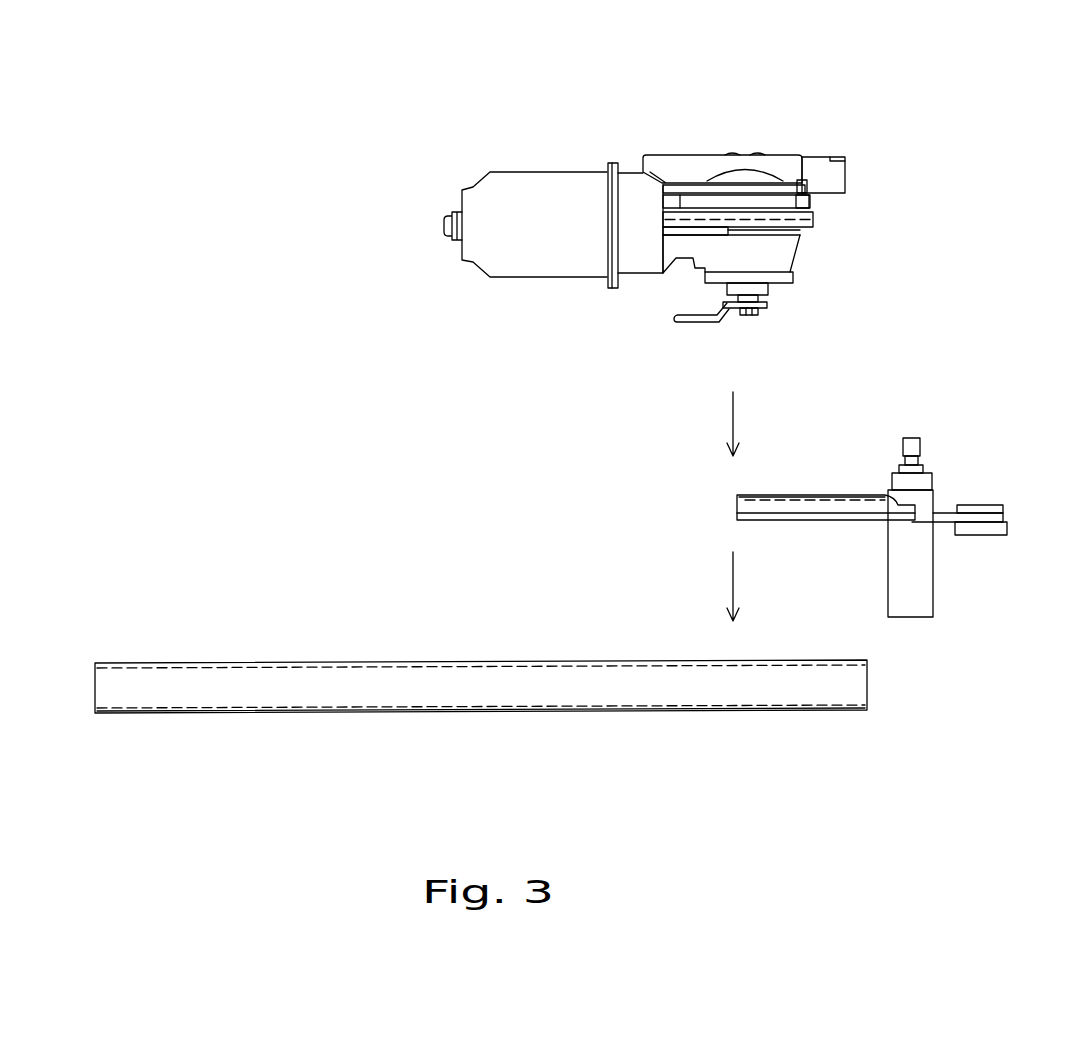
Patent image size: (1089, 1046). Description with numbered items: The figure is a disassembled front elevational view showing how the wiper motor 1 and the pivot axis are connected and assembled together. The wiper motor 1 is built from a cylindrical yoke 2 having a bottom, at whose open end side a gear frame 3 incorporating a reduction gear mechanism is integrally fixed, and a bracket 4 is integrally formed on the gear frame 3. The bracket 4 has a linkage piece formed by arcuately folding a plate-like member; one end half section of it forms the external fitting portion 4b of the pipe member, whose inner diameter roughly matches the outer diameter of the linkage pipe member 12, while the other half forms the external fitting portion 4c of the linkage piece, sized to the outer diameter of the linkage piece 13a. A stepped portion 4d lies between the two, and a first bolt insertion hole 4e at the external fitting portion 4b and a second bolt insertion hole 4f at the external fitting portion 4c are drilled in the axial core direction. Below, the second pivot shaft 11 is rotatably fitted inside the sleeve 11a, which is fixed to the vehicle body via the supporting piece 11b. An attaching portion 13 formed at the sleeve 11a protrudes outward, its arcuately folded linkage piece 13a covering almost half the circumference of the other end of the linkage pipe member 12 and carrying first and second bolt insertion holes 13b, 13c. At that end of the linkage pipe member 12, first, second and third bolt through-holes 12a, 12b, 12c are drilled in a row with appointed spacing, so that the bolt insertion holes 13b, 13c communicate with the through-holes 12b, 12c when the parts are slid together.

The wiper motor 1 is at (593, 132).
The cylindrical yoke 2 is at (550, 198).
The gear frame 3 is at (637, 262).
The bracket 4 is at (690, 126).
The external fitting portion of the pipe member 4b is at (732, 150).
The external fitting portion of the linkage piece 4c is at (812, 158).
The stepped portion 4d is at (757, 233).
The first bolt insertion hole 4e is at (690, 235).
The second bolt insertion hole 4f is at (782, 150).
The second pivot shaft 11 is at (922, 465).
The sleeve 11a is at (922, 586).
The supporting piece 11b is at (993, 505).
The linkage pipe member 12 is at (270, 672).
The first bolt through-hole 12a is at (690, 708).
The second bolt through-hole 12b is at (766, 708).
The third bolt through-hole 12c is at (838, 708).
The attaching portion 13 is at (902, 410).
The linkage piece 13a is at (863, 522).
The first bolt insertion hole 13b is at (765, 497).
The second bolt insertion hole 13c is at (835, 497).